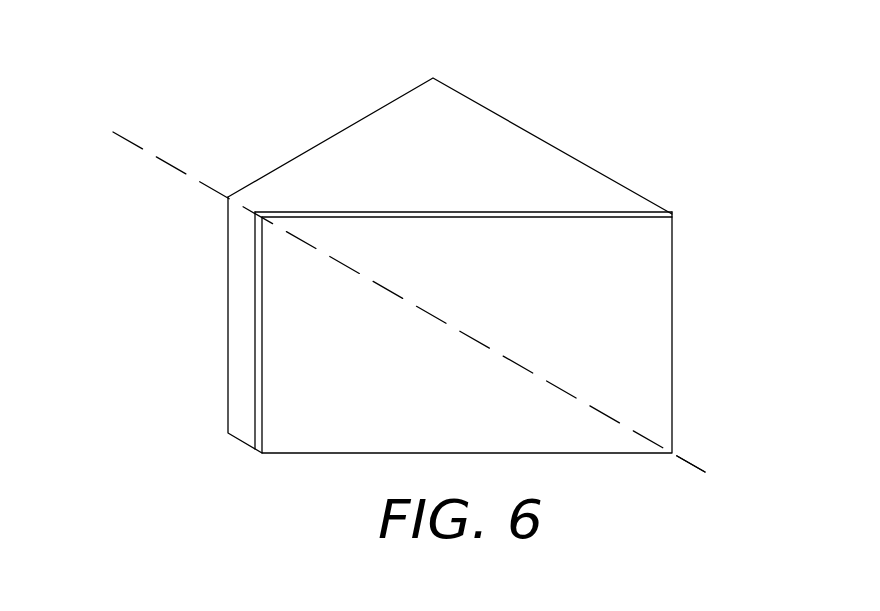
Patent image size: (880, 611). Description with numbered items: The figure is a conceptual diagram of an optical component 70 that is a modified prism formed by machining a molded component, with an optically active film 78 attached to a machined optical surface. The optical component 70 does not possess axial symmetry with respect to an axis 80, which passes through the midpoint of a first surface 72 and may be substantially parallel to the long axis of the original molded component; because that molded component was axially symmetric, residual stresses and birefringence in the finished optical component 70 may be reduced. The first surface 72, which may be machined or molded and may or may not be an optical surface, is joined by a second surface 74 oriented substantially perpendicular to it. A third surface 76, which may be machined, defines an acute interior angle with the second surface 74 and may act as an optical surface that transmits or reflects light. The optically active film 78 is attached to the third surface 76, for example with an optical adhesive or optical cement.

The optical component 70 is at (117, 107).
The first surface 72 is at (228, 317).
The second surface 74 is at (580, 163).
The third surface 76 is at (595, 214).
The optically active film 78 is at (653, 350).
The axis 80 is at (695, 463).